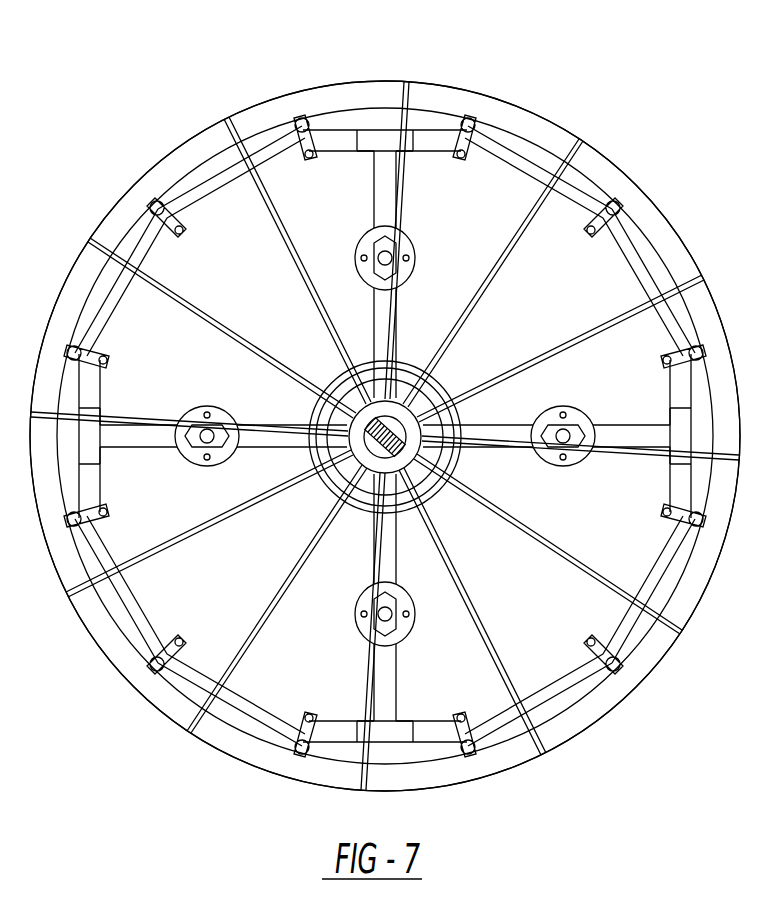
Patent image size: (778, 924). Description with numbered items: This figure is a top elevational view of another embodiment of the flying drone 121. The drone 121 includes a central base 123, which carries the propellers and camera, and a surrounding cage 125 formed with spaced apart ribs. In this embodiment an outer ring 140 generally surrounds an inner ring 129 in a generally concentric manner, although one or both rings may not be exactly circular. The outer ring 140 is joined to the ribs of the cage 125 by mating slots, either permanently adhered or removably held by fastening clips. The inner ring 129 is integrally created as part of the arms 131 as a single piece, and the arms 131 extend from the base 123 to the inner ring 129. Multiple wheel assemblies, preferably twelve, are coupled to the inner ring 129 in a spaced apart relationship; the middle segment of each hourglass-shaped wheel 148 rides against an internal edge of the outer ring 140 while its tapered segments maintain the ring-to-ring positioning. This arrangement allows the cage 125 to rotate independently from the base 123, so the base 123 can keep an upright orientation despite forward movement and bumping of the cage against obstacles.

The flying drone 121 is at (610, 100).
The base 123 is at (318, 494).
The cage 125 is at (497, 288).
The inner ring 129 is at (212, 202).
The arms 131 is at (120, 449).
The outer ring 140 is at (517, 766).
The wheel 148 is at (165, 662).